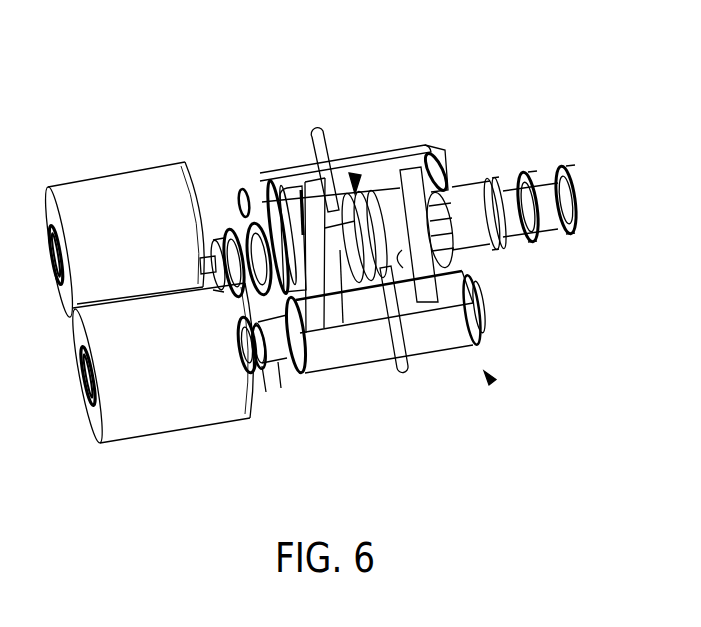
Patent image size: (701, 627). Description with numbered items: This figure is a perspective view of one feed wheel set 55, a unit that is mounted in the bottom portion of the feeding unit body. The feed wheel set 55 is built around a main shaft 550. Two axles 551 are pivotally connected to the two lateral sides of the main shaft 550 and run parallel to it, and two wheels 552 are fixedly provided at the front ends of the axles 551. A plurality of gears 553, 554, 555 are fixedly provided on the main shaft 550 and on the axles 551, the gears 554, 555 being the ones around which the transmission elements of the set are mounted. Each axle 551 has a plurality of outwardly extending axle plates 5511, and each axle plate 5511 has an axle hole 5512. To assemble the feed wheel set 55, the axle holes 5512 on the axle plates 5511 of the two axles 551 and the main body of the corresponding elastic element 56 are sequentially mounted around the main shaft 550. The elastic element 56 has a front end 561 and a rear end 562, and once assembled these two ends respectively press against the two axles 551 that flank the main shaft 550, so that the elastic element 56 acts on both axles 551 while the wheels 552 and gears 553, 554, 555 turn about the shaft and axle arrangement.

The feed wheel set 55 is at (492, 382).
The elastic element 56 is at (354, 172).
The main shaft 550 is at (197, 264).
The axle 551 is at (270, 343).
The wheel 552 is at (80, 194).
The gear 553 is at (563, 165).
The gear 554 is at (220, 225).
The gear 555 is at (243, 188).
The front end 561 is at (317, 130).
The rear end 562 is at (408, 343).
The axle plate 5511 is at (286, 185).
The axle hole 5512 is at (403, 260).